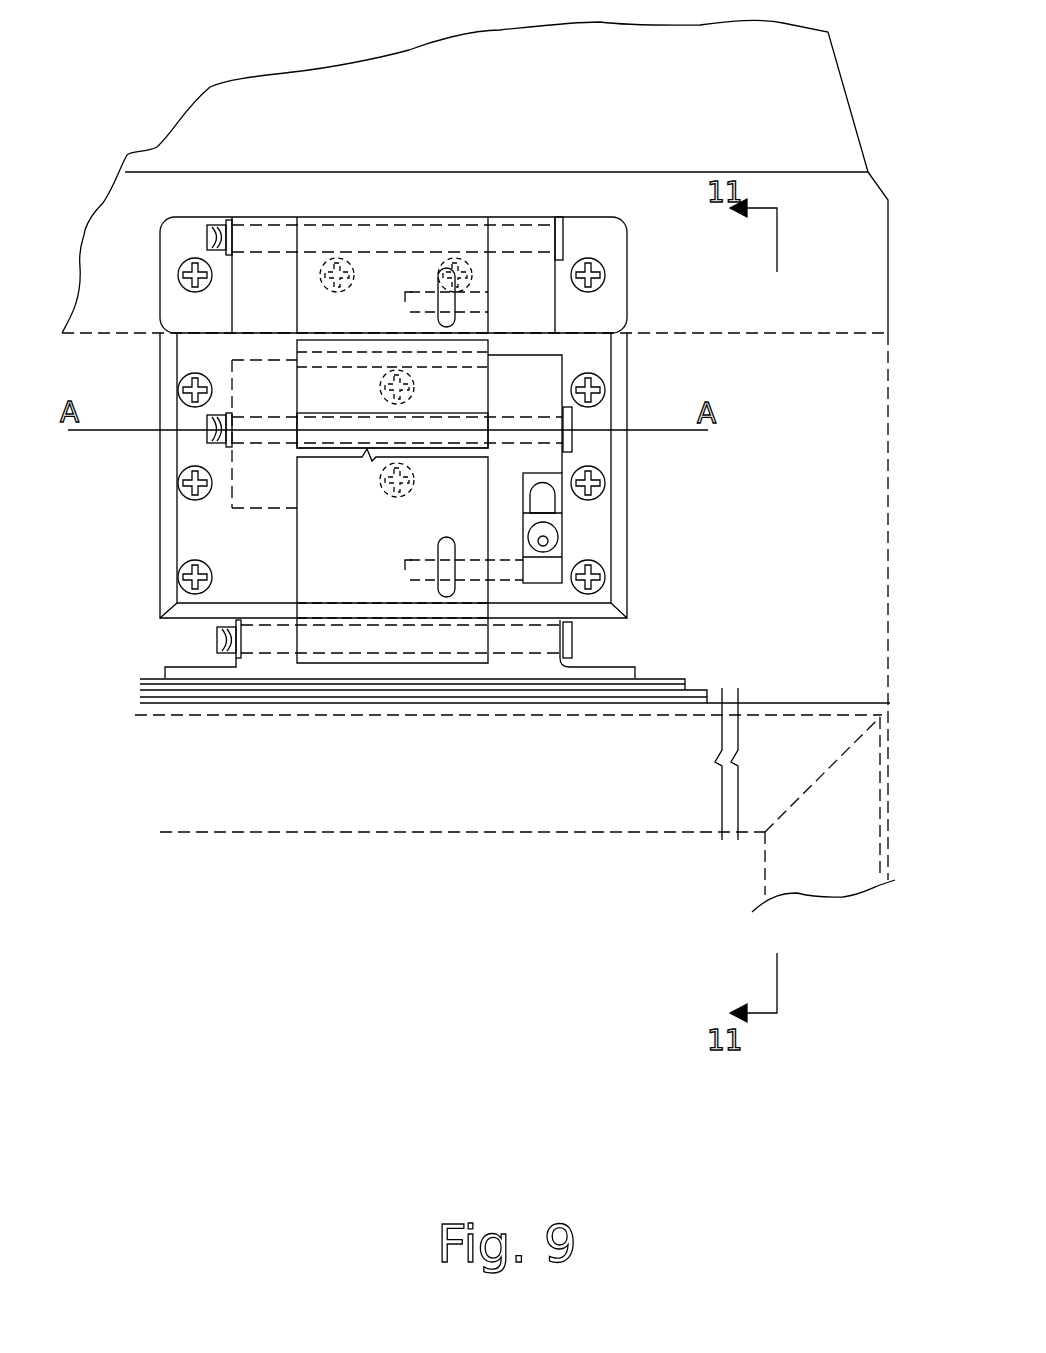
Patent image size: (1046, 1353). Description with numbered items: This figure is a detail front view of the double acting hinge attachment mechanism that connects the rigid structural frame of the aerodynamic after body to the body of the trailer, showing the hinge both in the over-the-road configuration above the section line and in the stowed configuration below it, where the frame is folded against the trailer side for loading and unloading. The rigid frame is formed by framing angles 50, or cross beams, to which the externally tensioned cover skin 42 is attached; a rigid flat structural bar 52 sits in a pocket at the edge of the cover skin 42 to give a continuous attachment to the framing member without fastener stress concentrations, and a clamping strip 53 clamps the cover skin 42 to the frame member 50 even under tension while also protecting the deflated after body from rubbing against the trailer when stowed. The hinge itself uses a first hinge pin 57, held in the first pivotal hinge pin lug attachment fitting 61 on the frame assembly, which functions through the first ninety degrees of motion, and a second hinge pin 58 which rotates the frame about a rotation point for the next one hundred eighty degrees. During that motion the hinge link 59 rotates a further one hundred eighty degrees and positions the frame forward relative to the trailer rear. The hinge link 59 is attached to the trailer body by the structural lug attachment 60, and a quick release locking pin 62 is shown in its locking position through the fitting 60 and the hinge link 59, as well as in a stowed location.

The externally tensioned cover skin 42 is at (848, 98).
The framing angles 50 is at (815, 703).
The rigid flat structural bar 52 is at (625, 693).
The clamping strip 53 is at (885, 188).
The first hinge pin 57 is at (515, 233).
The second hinge pin 58 is at (573, 423).
The hinge link 59 is at (300, 258).
The structural lug attachment 60 is at (230, 373).
The first pivotal hinge pin lug attachment fitting 61 is at (627, 245).
The quick release locking pin 62 is at (560, 530).